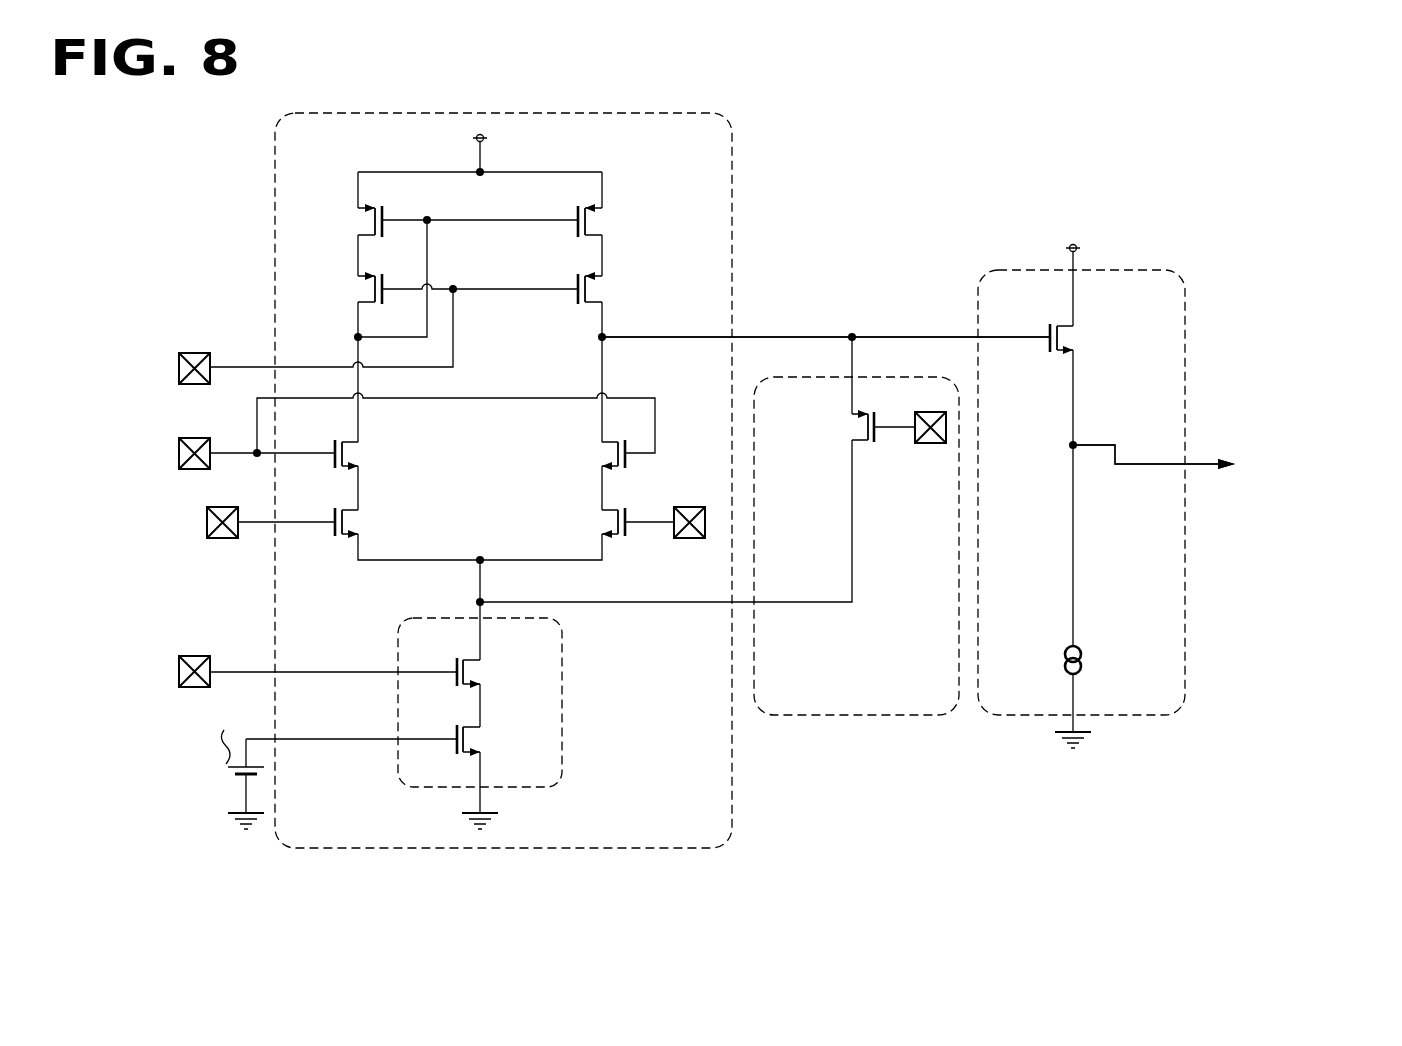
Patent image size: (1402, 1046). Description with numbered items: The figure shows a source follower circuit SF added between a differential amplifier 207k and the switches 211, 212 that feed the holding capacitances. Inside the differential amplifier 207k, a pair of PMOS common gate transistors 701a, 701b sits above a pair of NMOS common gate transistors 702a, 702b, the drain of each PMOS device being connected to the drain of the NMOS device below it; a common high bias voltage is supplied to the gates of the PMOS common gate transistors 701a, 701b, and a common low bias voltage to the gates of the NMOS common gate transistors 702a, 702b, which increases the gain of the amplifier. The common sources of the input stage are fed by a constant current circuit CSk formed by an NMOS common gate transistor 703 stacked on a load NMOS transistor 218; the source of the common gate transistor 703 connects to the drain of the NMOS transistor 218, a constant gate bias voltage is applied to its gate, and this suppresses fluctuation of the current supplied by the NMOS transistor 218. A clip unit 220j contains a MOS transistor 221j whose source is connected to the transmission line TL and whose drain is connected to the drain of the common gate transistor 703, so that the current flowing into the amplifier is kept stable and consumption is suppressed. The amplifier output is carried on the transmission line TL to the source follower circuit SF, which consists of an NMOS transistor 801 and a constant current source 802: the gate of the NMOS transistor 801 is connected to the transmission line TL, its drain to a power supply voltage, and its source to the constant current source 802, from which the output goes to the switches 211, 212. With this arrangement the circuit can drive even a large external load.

The differential amplifier 207k is at (581, 509).
The common gate transistor 701a is at (600, 287).
The common gate transistor 701b is at (361, 288).
The common gate transistor 702a is at (599, 455).
The common gate transistor 702b is at (362, 455).
The common gate transistor 703 is at (483, 671).
The NMOS transistor 218 is at (483, 739).
The constant current circuit CSk is at (562, 690).
The transmission line TL is at (794, 326).
The clip unit 220j is at (719, 555).
The MOS transistor 221j is at (847, 430).
The source follower circuit SF is at (1128, 715).
The NMOS transistor 801 is at (1075, 339).
The constant current source 802 is at (1066, 657).
The switch 211 is at (1210, 463).
The switch 212 is at (1210, 463).